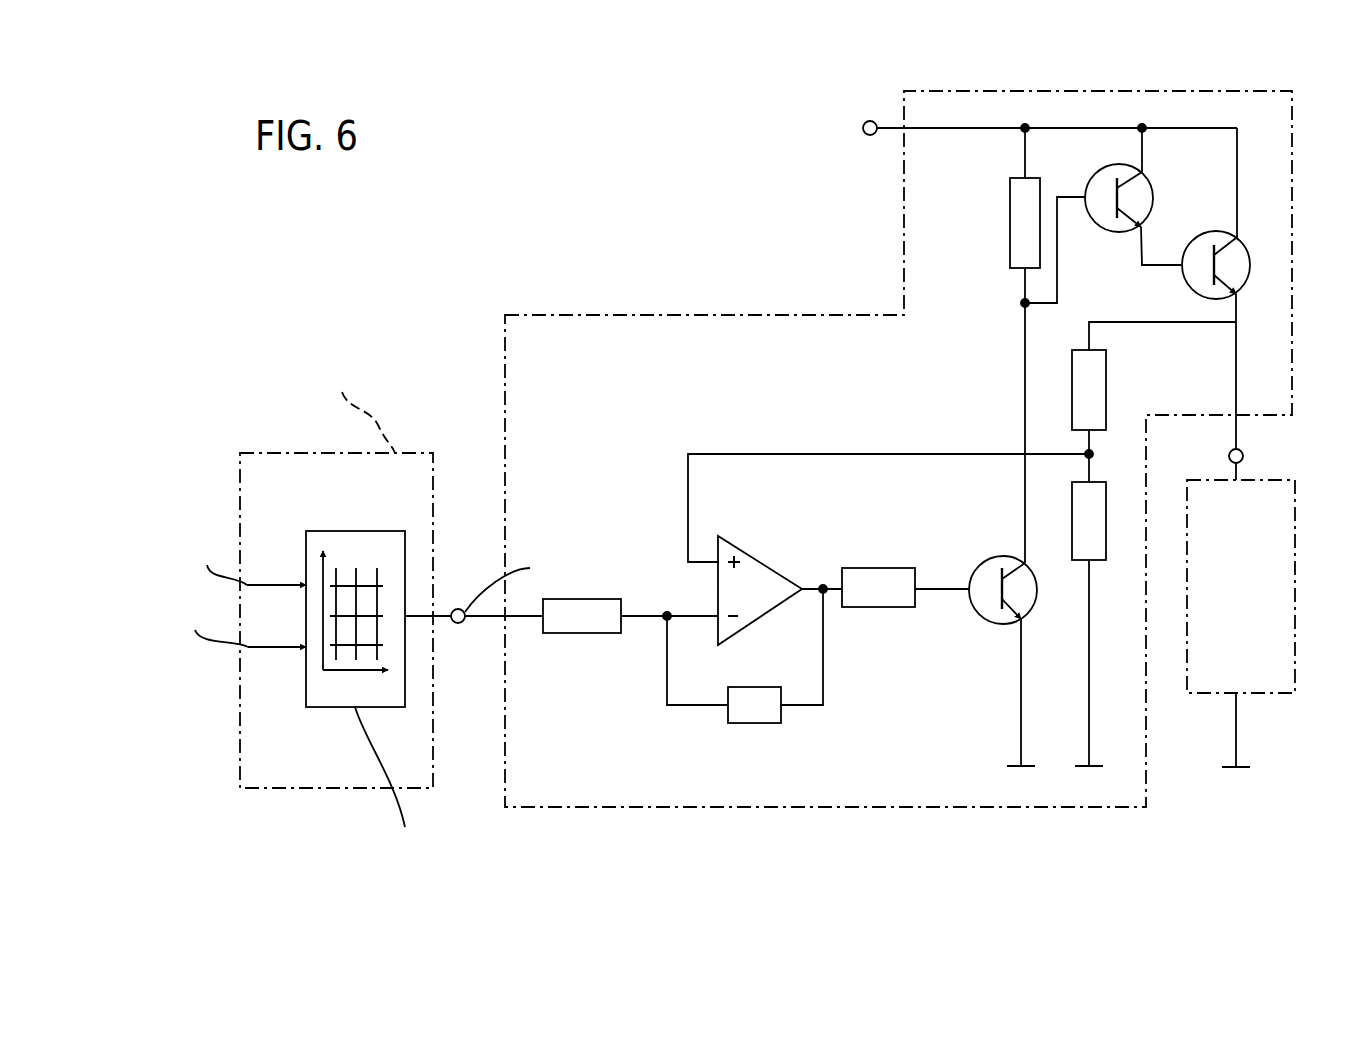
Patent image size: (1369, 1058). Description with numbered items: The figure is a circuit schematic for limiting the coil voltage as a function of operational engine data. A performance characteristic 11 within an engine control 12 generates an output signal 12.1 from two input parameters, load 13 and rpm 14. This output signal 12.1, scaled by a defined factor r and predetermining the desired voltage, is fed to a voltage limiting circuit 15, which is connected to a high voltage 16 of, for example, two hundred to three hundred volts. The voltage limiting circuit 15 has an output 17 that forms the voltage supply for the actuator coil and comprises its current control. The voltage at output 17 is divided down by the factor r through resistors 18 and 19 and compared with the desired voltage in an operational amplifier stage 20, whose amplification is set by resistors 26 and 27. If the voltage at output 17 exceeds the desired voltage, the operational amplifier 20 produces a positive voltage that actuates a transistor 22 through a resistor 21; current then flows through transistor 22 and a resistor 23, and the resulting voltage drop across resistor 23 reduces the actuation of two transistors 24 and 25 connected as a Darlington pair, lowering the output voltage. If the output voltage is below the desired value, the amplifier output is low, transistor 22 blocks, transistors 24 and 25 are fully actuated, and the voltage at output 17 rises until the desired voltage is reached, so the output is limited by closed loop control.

The performance characteristic 11 is at (355, 540).
The engine control 12 is at (297, 463).
The output signal 12.1 is at (458, 609).
The load 13 is at (250, 647).
The rpm 14 is at (257, 585).
The voltage limiting circuit 15 is at (535, 347).
The high voltage 16 is at (869, 118).
The output 17 is at (1246, 456).
The resistor 18 is at (1106, 383).
The resistor 19 is at (1093, 530).
The operational amplifier stage 20 is at (755, 576).
The resistor 21 is at (877, 607).
The transistor 22 is at (988, 622).
The resistor 23 is at (1022, 226).
The transistor 24 is at (1155, 193).
The transistor 25 is at (1248, 237).
The resistor 26 is at (753, 705).
The resistor 27 is at (581, 608).